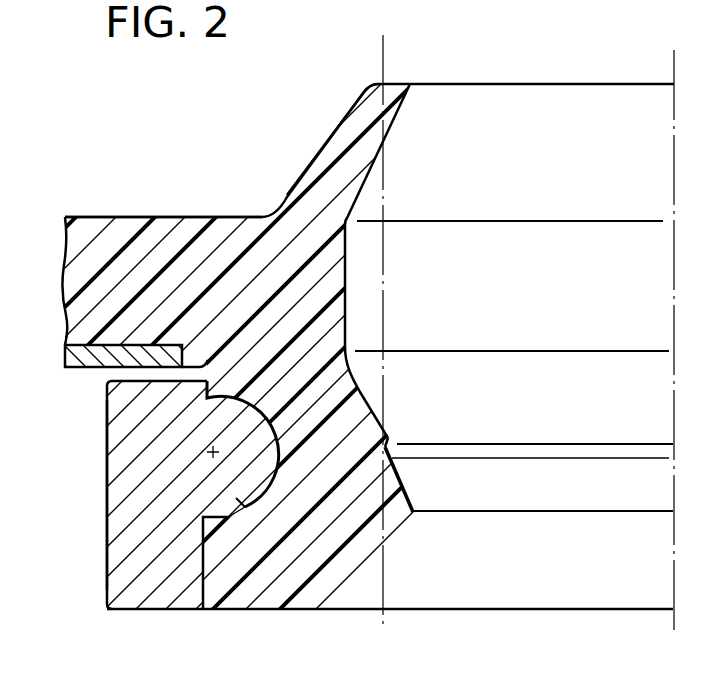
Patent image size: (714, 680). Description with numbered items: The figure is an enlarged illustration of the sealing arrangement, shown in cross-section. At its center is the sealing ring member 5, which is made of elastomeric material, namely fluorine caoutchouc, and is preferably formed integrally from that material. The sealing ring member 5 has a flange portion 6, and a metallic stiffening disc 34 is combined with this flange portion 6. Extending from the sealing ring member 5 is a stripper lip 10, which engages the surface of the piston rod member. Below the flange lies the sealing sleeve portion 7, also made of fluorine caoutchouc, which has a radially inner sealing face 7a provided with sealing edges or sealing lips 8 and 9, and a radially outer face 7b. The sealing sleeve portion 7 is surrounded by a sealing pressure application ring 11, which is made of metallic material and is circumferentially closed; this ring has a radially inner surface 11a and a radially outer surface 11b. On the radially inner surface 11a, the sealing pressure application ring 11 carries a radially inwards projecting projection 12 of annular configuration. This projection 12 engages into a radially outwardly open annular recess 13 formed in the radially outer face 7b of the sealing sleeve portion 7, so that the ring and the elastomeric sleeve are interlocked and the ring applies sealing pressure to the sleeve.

The sealing ring member 5 is at (128, 160).
The flange portion 6 is at (216, 258).
The sealing sleeve portion 7 is at (318, 562).
The radially inner sealing face 7a is at (405, 490).
The radially outer face 7b is at (257, 496).
The sealing edge 8 is at (414, 513).
The sealing edge 9 is at (392, 456).
The stripper lip 10 is at (352, 130).
The sealing pressure application ring 11 is at (130, 583).
The radially inner surface 11a is at (252, 506).
The radially outer surface 11b is at (107, 528).
The projection 12 is at (227, 493).
The annular recess 13 is at (337, 423).
The stiffening disc 34 is at (90, 367).